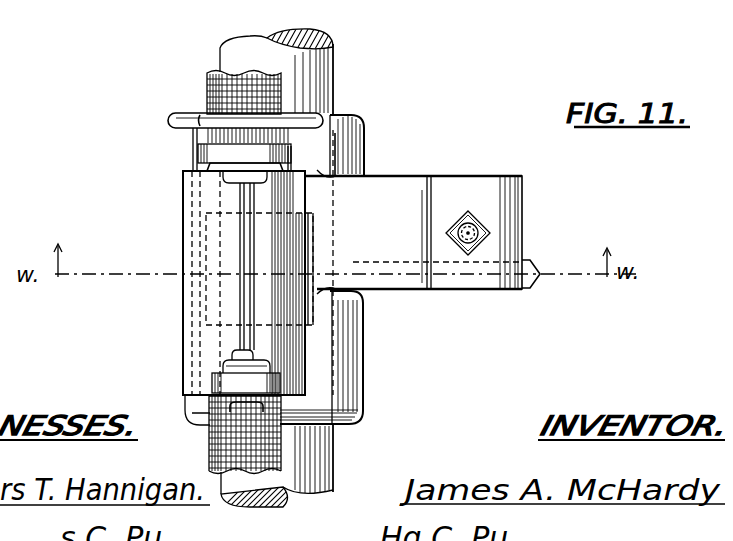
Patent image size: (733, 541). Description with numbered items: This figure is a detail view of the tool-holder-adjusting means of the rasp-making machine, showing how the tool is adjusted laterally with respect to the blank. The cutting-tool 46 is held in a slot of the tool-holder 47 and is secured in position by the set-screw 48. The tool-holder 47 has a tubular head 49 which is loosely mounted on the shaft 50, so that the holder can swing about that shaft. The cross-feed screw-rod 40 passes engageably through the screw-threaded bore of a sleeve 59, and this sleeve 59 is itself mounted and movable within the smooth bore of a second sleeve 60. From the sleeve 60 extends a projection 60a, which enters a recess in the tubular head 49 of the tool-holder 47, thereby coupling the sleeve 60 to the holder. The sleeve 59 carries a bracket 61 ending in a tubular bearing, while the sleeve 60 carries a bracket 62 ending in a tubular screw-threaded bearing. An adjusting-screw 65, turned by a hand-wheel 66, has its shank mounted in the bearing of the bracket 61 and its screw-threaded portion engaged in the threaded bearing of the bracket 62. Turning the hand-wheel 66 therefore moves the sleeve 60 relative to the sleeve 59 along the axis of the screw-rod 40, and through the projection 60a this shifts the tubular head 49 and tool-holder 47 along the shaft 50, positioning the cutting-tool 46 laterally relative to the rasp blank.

The screw-rod 40 is at (217, 92).
The cutting-tool 46 is at (537, 278).
The tool-holder 47 is at (489, 185).
The set-screw 48 is at (466, 232).
The tubular head 49 is at (350, 159).
The shaft 50 is at (313, 78).
The sleeve 59 is at (292, 160).
The sleeve 60 is at (183, 193).
The projection 60a is at (320, 243).
The bracket 61 is at (197, 153).
The bracket 62 is at (226, 380).
The adjusting-screw 65 is at (242, 267).
The hand-wheel 66 is at (170, 119).